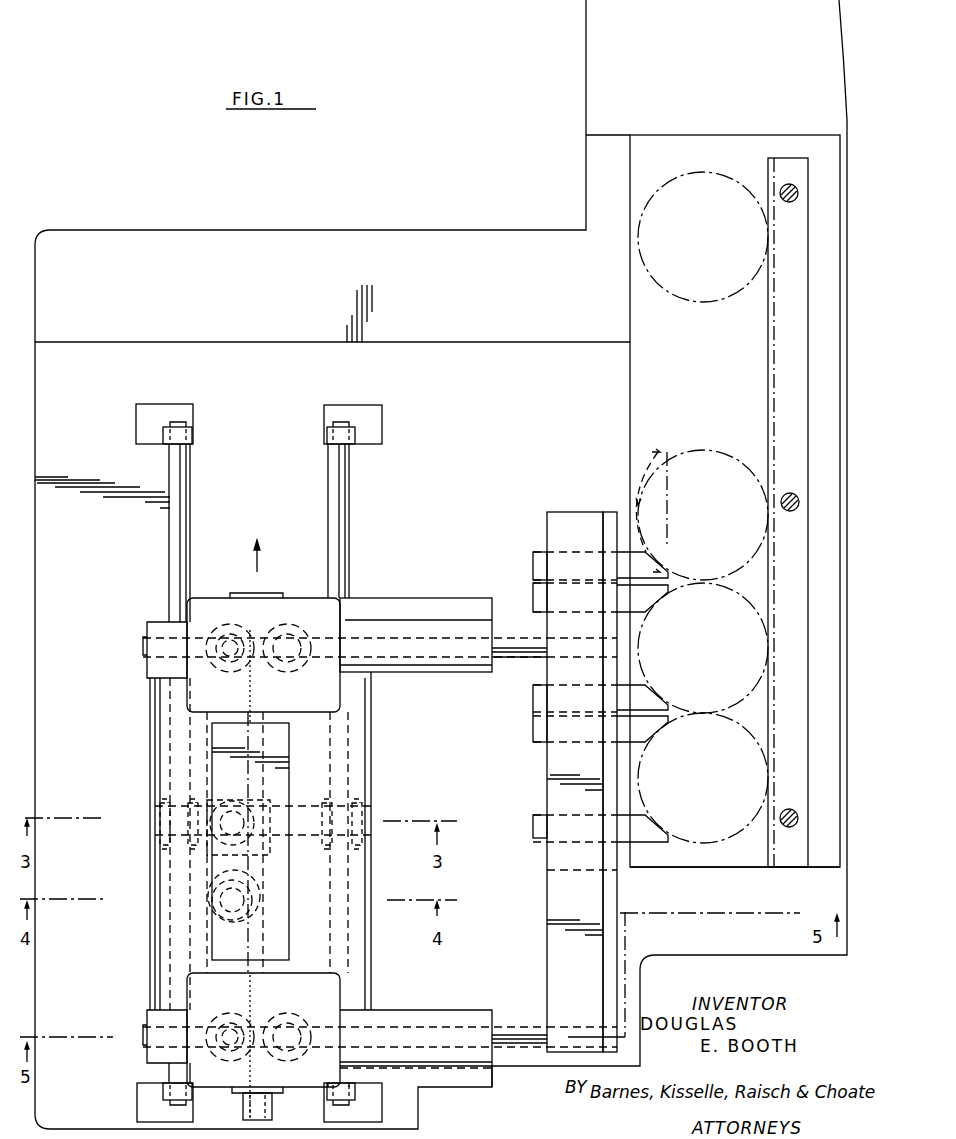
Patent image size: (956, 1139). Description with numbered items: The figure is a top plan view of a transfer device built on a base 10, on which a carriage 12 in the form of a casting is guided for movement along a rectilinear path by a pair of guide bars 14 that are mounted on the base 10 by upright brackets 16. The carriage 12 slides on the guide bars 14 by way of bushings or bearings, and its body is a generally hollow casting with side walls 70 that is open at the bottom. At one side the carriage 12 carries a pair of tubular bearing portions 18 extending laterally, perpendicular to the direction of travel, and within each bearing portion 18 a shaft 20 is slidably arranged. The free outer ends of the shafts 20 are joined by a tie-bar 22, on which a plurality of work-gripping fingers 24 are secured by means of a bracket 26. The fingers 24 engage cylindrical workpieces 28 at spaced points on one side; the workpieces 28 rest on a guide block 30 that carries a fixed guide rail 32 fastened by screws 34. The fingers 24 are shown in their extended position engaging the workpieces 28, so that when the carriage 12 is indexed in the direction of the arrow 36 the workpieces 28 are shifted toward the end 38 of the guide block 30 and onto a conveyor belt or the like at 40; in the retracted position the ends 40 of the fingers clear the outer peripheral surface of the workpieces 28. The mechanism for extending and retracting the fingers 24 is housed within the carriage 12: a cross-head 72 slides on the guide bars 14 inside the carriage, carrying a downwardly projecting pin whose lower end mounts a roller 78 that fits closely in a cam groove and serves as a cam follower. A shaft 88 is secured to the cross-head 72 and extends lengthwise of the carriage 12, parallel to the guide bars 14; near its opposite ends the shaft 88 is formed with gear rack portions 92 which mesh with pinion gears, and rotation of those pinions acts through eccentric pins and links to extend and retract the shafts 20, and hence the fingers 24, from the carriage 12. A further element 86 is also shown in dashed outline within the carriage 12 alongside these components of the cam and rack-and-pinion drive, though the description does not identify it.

The base 10 is at (503, 341).
The carriage 12 is at (146, 902).
The guide bars 14 is at (181, 532).
The upright brackets 16 is at (170, 412).
The tubular bearing portions 18 is at (432, 663).
The shaft 20 is at (520, 652).
The tie-bar 22 is at (555, 950).
The work-gripping fingers 24 is at (535, 828).
The bracket 26 is at (556, 798).
The cylindrical workpieces 28 is at (725, 798).
The guide block 30 is at (747, 858).
The fixed guide rail 32 is at (768, 362).
The screws 34 is at (796, 200).
The arrow 36 is at (259, 557).
The end of guide block 38 is at (700, 135).
The ends of the fingers 40 is at (597, 2).
The side walls 70 is at (370, 937).
The cross-head 72 is at (314, 830).
The roller 78 is at (233, 801).
The roller 86 is at (262, 916).
The shaft 88 is at (268, 792).
The gear rack portions 92 is at (258, 695).